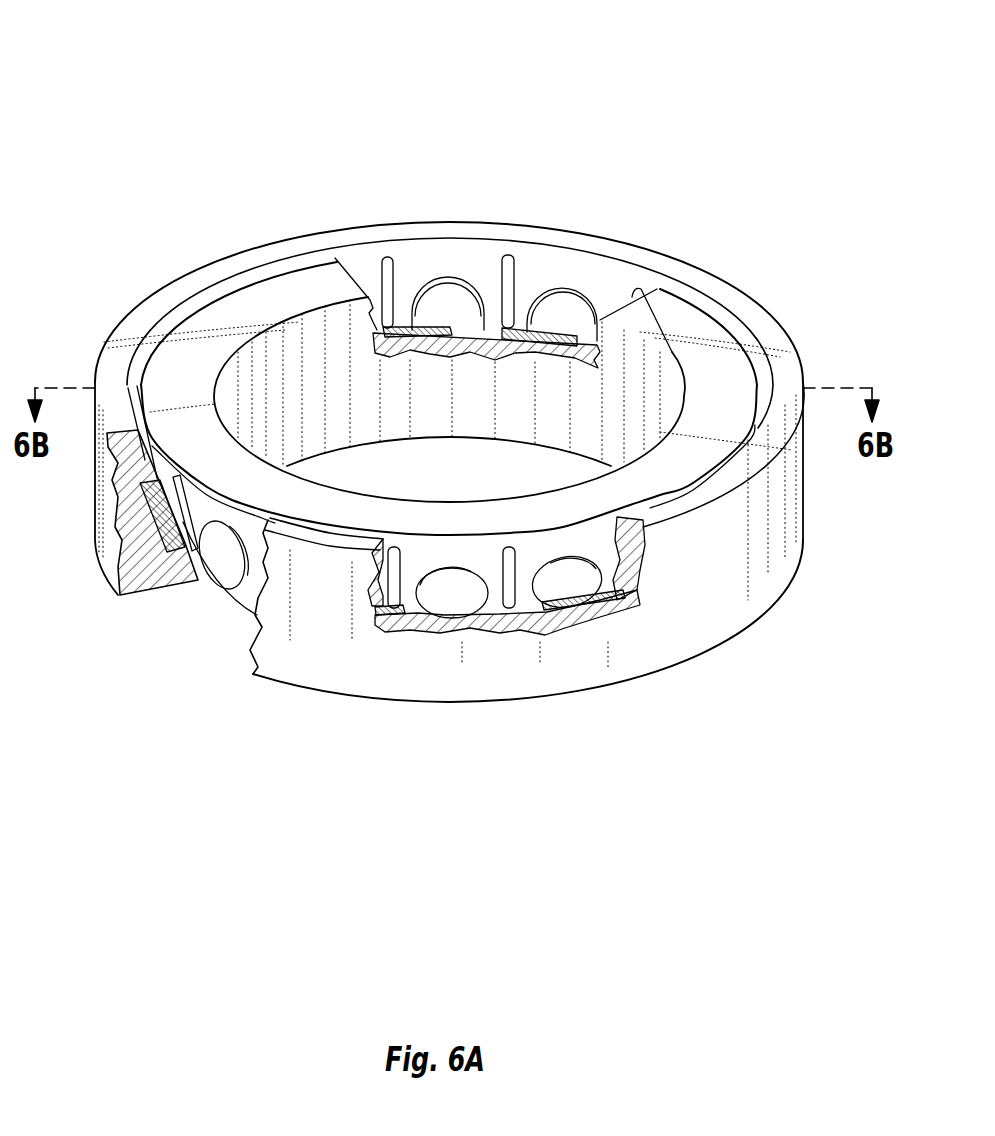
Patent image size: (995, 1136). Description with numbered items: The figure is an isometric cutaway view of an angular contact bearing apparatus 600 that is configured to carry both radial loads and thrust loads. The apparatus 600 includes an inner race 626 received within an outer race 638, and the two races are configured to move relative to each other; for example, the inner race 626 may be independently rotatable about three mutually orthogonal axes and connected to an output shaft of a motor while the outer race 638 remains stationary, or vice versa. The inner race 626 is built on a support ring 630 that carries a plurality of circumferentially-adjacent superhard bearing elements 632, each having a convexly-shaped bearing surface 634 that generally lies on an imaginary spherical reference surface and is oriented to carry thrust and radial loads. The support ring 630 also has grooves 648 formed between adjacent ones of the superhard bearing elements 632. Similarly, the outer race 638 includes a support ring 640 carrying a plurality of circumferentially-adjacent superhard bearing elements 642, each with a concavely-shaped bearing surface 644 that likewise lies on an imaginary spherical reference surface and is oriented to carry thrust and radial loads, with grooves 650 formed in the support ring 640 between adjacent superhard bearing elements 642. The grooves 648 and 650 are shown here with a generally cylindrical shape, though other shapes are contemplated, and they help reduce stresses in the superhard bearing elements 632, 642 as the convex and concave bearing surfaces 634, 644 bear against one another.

The angular contact bearing apparatus 600 is at (236, 76).
The inner race 626 is at (293, 270).
The support ring 630 is at (672, 298).
The superhard bearing elements 632 is at (366, 610).
The convexly-shaped bearing surface 634 is at (437, 603).
The outer race 638 is at (724, 645).
The support ring 640 is at (100, 566).
The superhard bearing elements 642 is at (430, 278).
The concavely-shaped bearing surface 644 is at (453, 292).
The grooves 648 is at (560, 604).
The grooves 650 is at (509, 258).